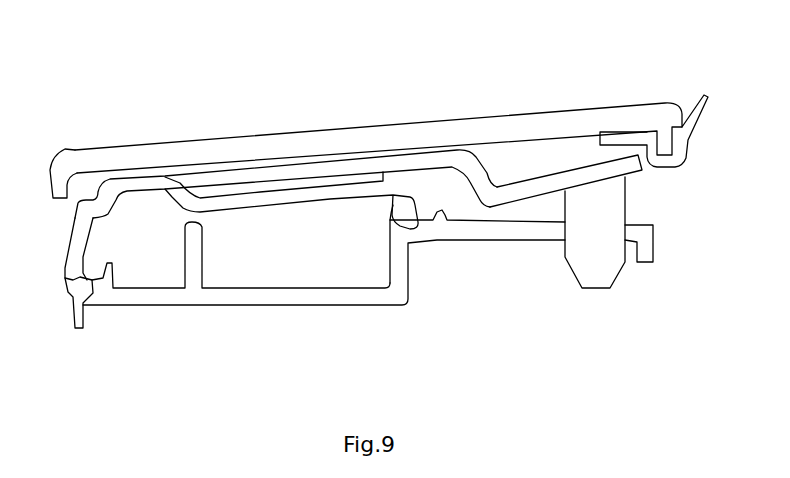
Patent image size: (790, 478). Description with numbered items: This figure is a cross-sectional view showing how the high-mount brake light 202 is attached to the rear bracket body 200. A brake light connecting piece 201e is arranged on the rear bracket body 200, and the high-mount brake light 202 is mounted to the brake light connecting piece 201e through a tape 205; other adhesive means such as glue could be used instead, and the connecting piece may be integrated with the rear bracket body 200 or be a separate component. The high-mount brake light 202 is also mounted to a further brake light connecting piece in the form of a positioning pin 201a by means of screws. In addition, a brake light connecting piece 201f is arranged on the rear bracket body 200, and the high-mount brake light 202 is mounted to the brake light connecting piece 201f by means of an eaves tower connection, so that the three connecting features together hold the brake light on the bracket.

The rear bracket body 200 is at (473, 122).
The brake light connecting piece 201f is at (90, 162).
The brake light connecting piece 201e is at (353, 290).
The high-mount brake light 202 is at (162, 268).
The tape 205 is at (353, 290).
The positioning pin 201a is at (610, 262).